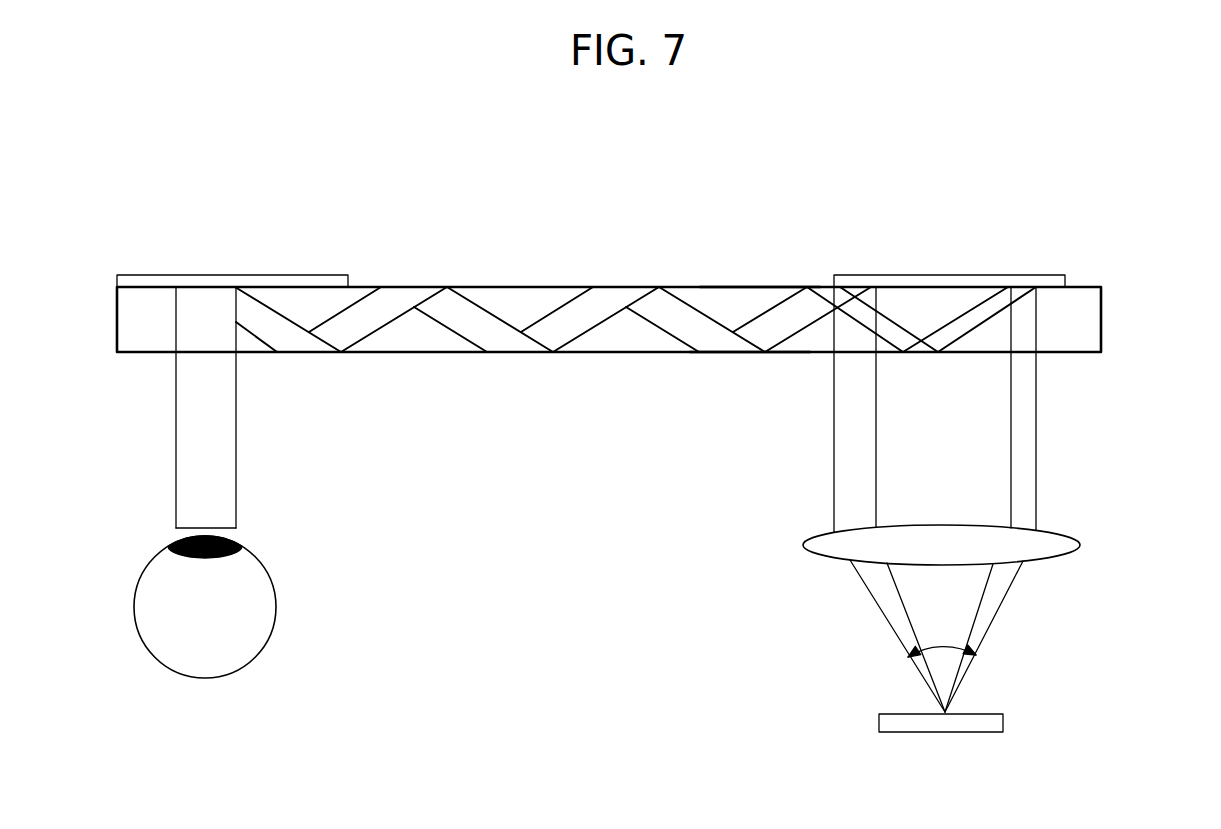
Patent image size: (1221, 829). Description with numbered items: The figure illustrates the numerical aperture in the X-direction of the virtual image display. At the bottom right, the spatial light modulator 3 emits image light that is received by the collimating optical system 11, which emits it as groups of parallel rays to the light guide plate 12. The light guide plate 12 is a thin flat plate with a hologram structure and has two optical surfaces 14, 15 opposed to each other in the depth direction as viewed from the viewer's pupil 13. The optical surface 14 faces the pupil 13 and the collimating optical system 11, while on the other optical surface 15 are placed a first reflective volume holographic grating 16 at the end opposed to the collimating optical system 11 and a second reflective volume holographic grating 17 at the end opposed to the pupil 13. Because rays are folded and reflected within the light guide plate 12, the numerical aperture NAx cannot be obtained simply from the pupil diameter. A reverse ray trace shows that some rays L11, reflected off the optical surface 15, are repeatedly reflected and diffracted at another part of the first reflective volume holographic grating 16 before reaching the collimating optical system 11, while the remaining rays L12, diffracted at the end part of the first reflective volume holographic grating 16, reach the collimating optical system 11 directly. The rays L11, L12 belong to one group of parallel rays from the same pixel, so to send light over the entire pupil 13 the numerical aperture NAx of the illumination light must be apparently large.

The spatial light modulator 3 is at (1003, 725).
The collimating optical system 11 is at (1060, 528).
The light guide plate 12 is at (693, 287).
The pupil 13 is at (277, 615).
The optical surface 14 is at (750, 370).
The optical surface 15 is at (770, 268).
The first reflective volume holographic grating 16 is at (932, 275).
The second reflective volume holographic grating 17 is at (243, 275).
The rays L11 is at (845, 497).
The rays L12 is at (1023, 410).
The numerical aperture in the X-direction NAx is at (947, 640).